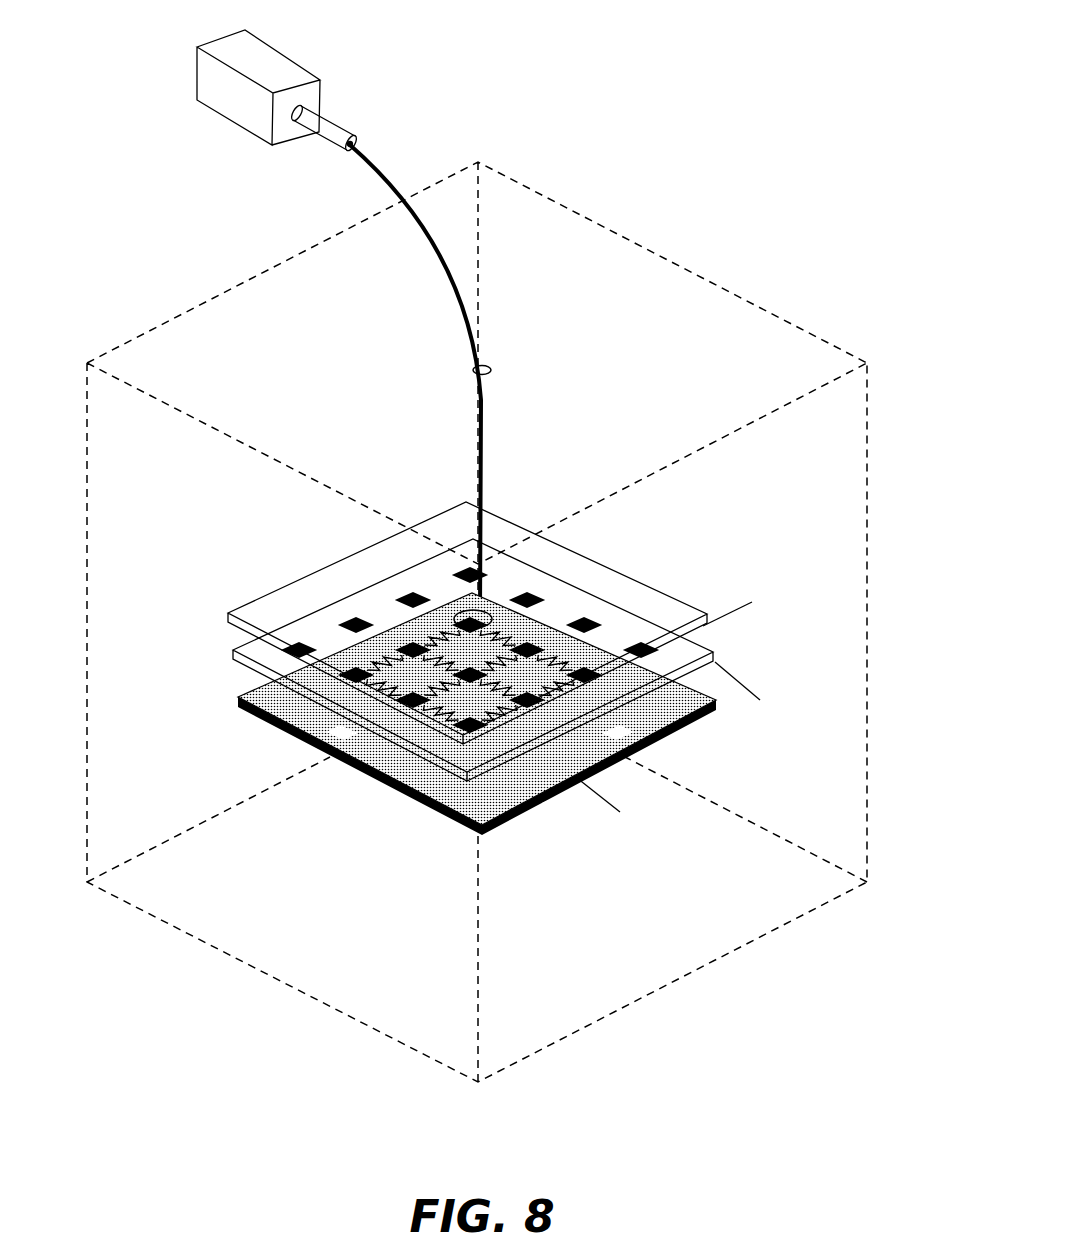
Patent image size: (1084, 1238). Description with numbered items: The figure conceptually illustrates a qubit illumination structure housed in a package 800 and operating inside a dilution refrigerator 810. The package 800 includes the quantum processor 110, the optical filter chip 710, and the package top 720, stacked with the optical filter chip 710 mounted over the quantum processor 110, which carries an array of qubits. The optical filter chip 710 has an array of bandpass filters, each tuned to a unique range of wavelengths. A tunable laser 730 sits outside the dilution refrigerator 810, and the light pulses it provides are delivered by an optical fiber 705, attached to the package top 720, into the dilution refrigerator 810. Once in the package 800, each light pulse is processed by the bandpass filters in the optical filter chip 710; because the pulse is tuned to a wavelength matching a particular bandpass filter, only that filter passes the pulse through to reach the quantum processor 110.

The tunable laser 730 is at (217, 107).
The optical fiber 705 is at (465, 310).
The package top 720 is at (227, 617).
The optical filter chip 710 is at (235, 662).
The quantum processor 110 is at (247, 712).
The package 800 is at (513, 675).
The dilution refrigerator 810 is at (183, 930).